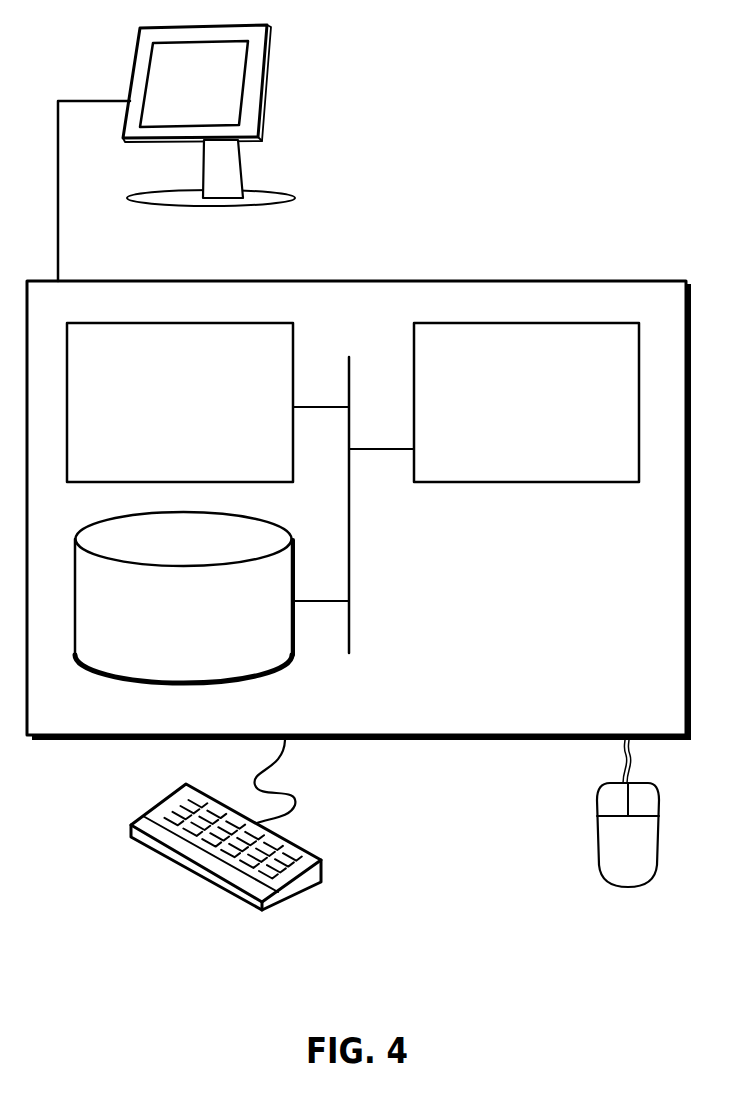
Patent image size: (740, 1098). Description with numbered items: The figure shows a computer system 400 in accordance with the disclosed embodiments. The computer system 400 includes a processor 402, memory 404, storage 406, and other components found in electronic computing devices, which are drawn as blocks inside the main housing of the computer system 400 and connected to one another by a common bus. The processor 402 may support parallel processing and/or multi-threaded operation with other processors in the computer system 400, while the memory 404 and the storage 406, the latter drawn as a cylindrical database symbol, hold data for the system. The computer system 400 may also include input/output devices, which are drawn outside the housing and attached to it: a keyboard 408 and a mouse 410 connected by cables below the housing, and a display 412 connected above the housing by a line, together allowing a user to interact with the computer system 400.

The computer system 400 is at (403, 258).
The processor 402 is at (552, 414).
The memory 404 is at (202, 414).
The storage 406 is at (209, 627).
The keyboard 408 is at (150, 845).
The mouse 410 is at (650, 856).
The display 412 is at (176, 153).